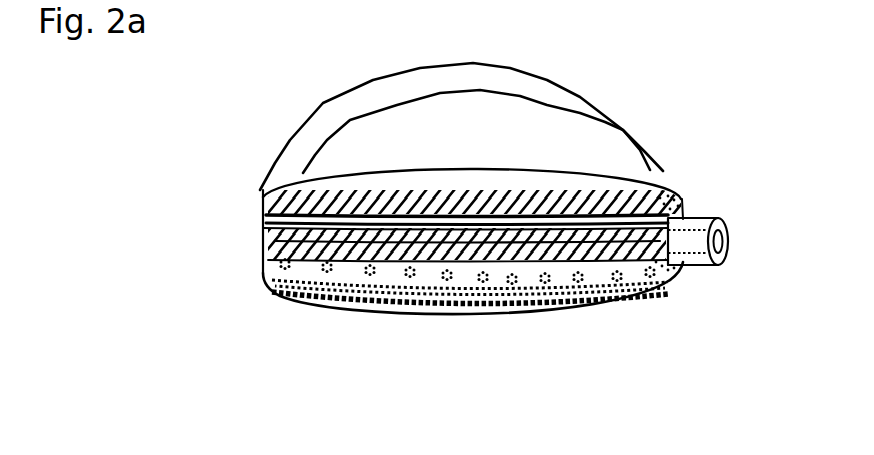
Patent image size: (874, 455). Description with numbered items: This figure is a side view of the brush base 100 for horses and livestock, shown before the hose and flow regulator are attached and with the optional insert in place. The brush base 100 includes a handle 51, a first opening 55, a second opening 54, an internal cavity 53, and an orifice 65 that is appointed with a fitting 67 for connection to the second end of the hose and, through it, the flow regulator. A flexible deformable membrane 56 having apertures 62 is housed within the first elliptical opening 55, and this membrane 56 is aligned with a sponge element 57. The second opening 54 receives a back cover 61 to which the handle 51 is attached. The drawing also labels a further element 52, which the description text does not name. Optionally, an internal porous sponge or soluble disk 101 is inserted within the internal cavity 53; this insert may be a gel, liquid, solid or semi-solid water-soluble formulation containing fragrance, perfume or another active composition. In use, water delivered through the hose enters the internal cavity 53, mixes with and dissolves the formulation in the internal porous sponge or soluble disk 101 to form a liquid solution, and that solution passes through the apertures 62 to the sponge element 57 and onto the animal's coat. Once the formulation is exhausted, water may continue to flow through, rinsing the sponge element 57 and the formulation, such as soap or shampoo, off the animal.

The brush base 100 is at (132, 137).
The handle 51 is at (549, 84).
The top layer 52 is at (443, 180).
The internal cavity 53 is at (680, 218).
The second opening 54 is at (300, 174).
The first opening 55 is at (270, 283).
The flexible deformable membrane 56 is at (677, 277).
The sponge element 57 is at (490, 313).
The back cover 61 is at (607, 170).
The apertures 62 is at (263, 255).
The orifice 65 is at (723, 237).
The fitting 67 is at (720, 267).
The internal porous sponge or soluble disk 101 is at (263, 228).